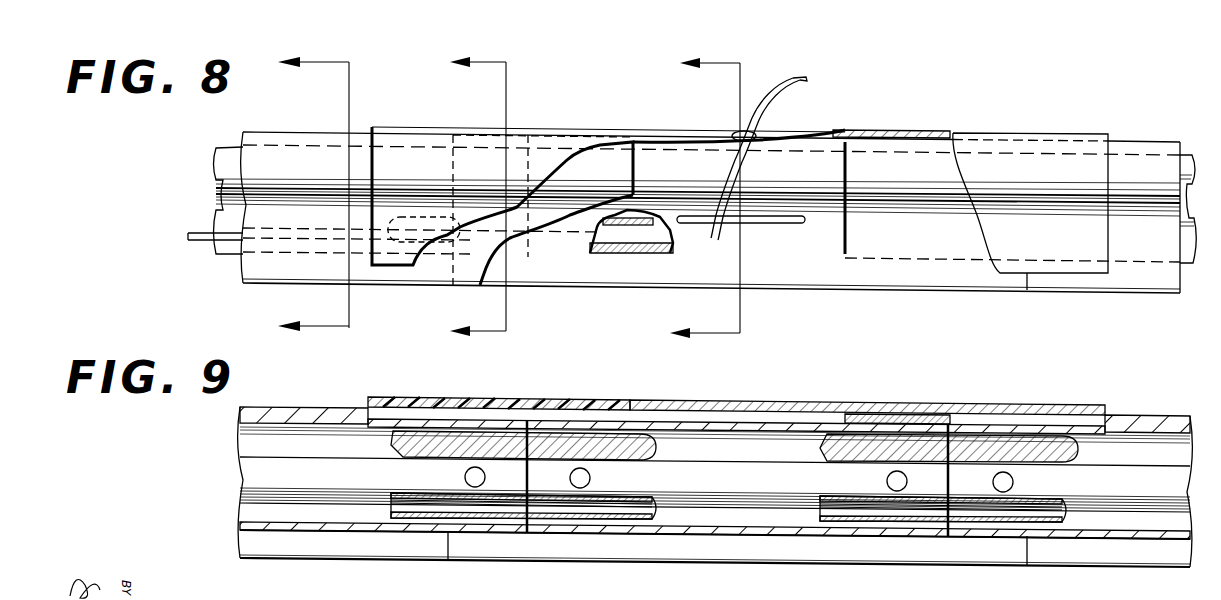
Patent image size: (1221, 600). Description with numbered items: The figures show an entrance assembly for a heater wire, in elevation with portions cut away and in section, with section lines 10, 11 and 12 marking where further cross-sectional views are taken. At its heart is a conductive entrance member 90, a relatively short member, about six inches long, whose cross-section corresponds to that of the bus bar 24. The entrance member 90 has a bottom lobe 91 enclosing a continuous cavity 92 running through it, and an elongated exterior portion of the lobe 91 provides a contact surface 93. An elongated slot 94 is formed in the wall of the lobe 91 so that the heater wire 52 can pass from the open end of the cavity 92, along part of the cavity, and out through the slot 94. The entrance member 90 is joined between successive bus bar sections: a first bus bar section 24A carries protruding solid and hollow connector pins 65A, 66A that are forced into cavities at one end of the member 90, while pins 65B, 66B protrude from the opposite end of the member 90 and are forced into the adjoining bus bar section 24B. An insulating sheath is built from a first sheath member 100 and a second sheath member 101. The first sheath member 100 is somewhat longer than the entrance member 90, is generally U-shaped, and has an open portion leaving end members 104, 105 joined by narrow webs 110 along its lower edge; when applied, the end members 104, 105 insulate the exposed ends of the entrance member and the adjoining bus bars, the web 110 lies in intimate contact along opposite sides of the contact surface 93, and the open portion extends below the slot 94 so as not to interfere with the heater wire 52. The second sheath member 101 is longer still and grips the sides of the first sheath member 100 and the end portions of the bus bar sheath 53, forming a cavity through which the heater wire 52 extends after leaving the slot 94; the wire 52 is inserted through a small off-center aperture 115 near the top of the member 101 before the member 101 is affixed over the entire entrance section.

In FIG. 8, the section line 10- 10 is at (296, 197).
In FIG. 8, the section line 11- 11 is at (690, 200).
In FIG. 8, the section line 12- 12 is at (460, 199).
In FIG. 8, the bus bar 24 is at (204, 160).
In FIG. 9, the first bus bar section 24A is at (1071, 486).
In FIG. 9, the adjoining bus bar section 24B is at (402, 476).
In FIG. 8, the heater wire 52 is at (198, 237).
In FIG. 8, the bus bar sheath 53 is at (297, 157).
In FIG. 9, the bus bar sheath 53 is at (320, 413).
In FIG. 9, the solid connector pin 65A is at (916, 446).
In FIG. 9, the solid connector pin 65B is at (490, 442).
In FIG. 9, the hollow connector pin 66A is at (974, 527).
In FIG. 9, the hollow connector pin 66B is at (492, 532).
In FIG. 9, the conductive entrance member 90 is at (733, 490).
In FIG. 9, the bottom lobe 91 is at (735, 518).
In FIG. 9, the cavity 92 is at (681, 511).
In FIG. 9, the contact surface 93 is at (657, 533).
In FIG. 8, the elongated slot 94 is at (768, 223).
In FIG. 8, the first sheath member 100 is at (929, 239).
In FIG. 8, the second sheath member 101 is at (988, 163).
In FIG. 9, the second sheath member 101 is at (739, 405).
In FIG. 8, the sheath end member 104 is at (607, 158).
In FIG. 9, the sheath end member 104 is at (560, 412).
In FIG. 8, the sheath end member 105 is at (900, 168).
In FIG. 9, the sheath end member 105 is at (866, 418).
In FIG. 8, the web 110 is at (819, 270).
In FIG. 9, the web 110 is at (774, 553).
In FIG. 8, the aperture 115 is at (756, 140).